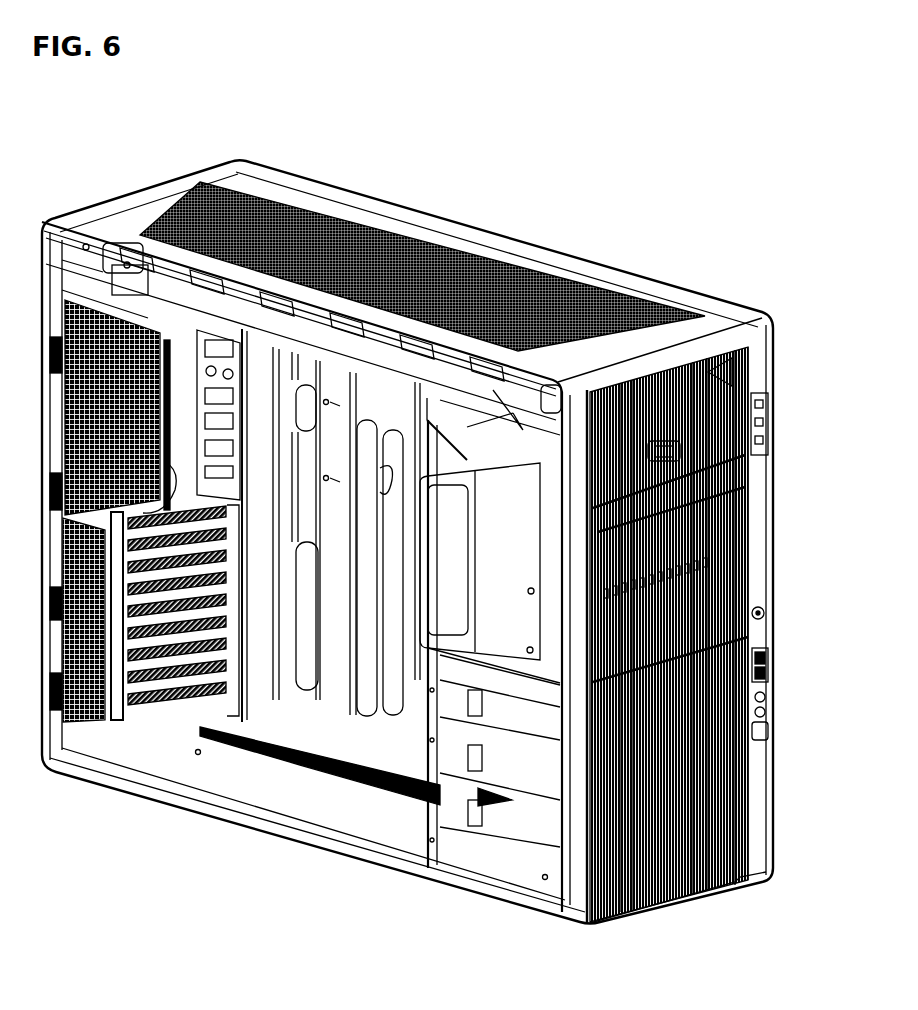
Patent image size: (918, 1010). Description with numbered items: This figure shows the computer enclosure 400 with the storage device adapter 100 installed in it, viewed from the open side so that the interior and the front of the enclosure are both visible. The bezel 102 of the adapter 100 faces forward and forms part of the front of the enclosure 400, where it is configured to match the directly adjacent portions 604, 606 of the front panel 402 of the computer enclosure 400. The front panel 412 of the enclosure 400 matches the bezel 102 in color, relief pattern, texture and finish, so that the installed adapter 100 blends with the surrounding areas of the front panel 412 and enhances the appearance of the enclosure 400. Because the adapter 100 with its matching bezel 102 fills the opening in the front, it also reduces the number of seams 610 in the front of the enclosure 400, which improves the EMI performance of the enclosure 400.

The storage device adapter 100 is at (727, 514).
The bezel 102 is at (717, 590).
The computer enclosure 400 is at (407, 541).
The front panel 402 is at (485, 508).
The front panel 412 is at (724, 782).
The directly adjacent portion of the front panel 604 is at (712, 450).
The directly adjacent portion of the front panel 606 is at (720, 687).
The seams 610 is at (690, 478).